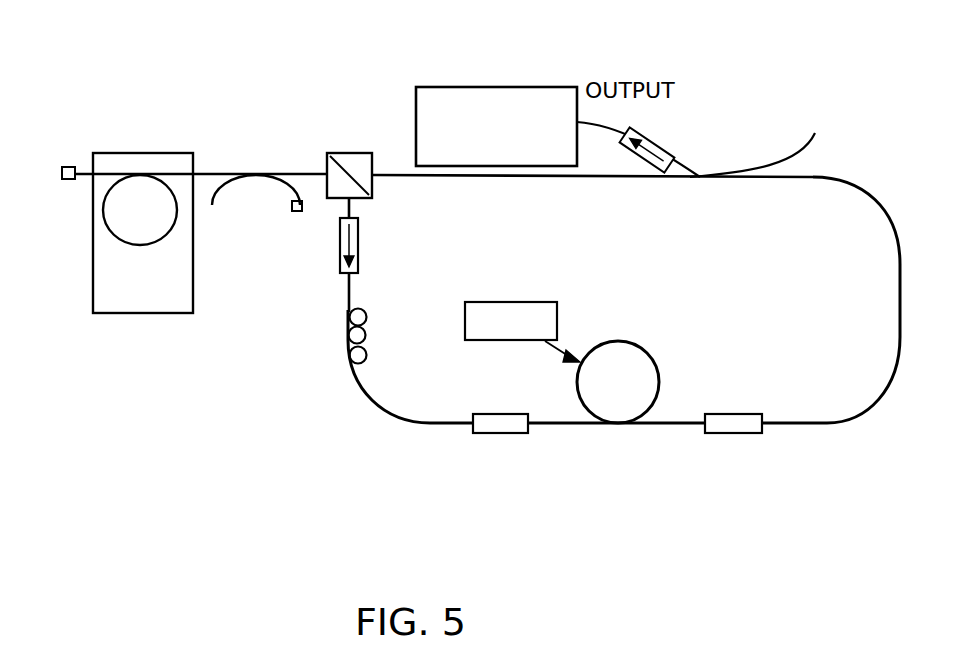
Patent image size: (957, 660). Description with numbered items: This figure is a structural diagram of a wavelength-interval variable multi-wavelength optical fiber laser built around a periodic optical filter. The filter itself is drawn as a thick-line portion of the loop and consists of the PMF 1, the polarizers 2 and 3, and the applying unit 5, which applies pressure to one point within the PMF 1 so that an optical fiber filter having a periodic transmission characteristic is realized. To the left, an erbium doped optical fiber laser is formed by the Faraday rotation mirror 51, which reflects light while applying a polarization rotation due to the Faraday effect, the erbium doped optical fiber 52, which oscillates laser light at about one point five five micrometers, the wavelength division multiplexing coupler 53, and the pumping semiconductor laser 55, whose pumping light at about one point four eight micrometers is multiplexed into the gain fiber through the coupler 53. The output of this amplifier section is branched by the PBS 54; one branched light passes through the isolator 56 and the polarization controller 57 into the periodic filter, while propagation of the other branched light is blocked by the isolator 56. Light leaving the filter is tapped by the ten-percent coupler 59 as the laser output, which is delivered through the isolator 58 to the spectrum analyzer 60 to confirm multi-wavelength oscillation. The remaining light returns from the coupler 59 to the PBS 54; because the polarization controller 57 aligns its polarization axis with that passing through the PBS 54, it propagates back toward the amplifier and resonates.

The PMF 1 is at (653, 353).
The polarizer 2 is at (481, 433).
The polarizer 3 is at (762, 431).
The applying unit 5 is at (510, 302).
The Faraday rotation mirror 51 is at (63, 175).
The erbium doped optical fiber 52 is at (160, 153).
The wavelength division multiplexing coupler 53 is at (247, 174).
The PBS 54 is at (378, 163).
The pumping semiconductor laser 55 is at (291, 207).
The isolator 56 is at (358, 256).
The polarization controller 57 is at (367, 319).
The isolator 58 is at (642, 134).
The 10%-coupler 59 is at (730, 178).
The spectrum analyzer 60 is at (507, 88).